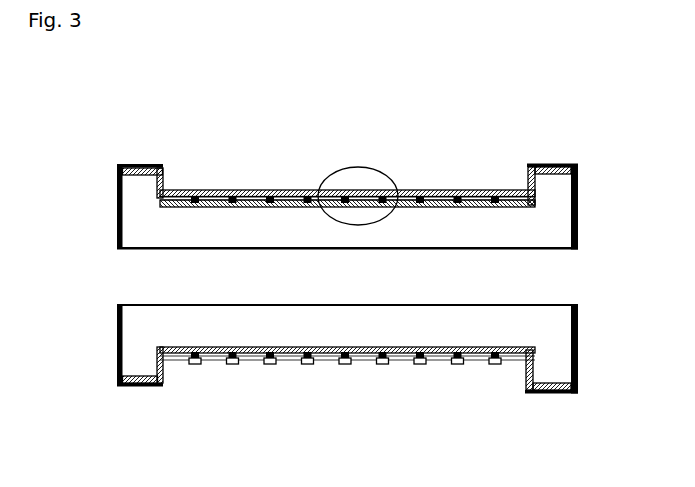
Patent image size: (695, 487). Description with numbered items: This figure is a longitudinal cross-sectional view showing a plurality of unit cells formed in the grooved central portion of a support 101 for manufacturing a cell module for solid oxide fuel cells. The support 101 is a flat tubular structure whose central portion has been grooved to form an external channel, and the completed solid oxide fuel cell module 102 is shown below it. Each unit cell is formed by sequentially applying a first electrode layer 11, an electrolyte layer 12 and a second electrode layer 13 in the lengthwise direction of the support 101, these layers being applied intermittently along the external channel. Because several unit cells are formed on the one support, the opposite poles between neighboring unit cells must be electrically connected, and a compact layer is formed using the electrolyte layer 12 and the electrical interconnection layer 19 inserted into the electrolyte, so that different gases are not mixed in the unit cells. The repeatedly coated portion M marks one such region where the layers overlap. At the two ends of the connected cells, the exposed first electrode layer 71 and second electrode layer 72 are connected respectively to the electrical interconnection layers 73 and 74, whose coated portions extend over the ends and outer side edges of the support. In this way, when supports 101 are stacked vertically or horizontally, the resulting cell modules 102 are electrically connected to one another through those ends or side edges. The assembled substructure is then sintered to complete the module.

The first gas electrode layer 11 is at (219, 189).
The electrolyte layer 12 is at (296, 189).
The second gas electrode layer 13 is at (437, 190).
The electrical interconnection layer 19 is at (195, 190).
The repeatedly coated portion M is at (371, 166).
The first gas electrode layer at support end 71 is at (166, 202).
The second gas electrode layer at support end 72 is at (521, 189).
The electric interconnection layer 73 is at (114, 214).
The electric interconnection layer 74 is at (580, 210).
The support 101 is at (343, 191).
The solid oxide fuel cell module 102 is at (450, 406).